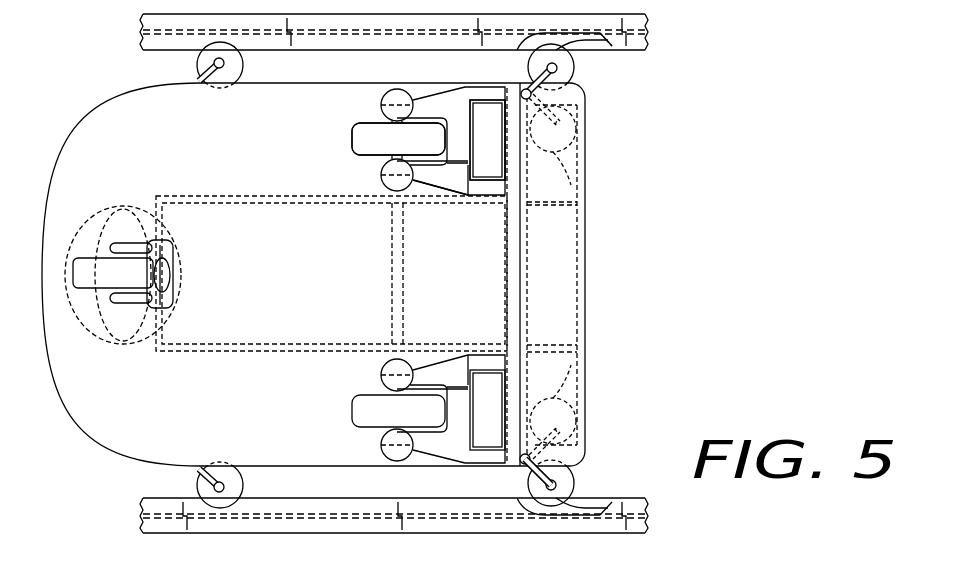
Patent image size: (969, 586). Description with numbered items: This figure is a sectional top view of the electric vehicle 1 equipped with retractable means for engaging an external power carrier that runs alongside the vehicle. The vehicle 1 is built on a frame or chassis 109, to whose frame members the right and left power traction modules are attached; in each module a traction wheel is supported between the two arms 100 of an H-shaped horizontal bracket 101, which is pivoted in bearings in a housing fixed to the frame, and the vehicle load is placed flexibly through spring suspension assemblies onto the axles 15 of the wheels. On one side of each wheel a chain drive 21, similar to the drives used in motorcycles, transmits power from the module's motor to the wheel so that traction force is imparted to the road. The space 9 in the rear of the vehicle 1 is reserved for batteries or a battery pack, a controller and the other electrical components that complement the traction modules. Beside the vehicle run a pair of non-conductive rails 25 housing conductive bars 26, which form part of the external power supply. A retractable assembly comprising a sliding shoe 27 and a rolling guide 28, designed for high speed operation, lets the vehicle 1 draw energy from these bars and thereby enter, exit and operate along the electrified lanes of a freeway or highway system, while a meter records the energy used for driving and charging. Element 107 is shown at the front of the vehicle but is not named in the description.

The vehicle 1 is at (72, 126).
The space 9 is at (590, 152).
The axles 15 is at (382, 164).
The chain drive 21 is at (468, 165).
The non-conductive rails 25 is at (457, 51).
The conductive bars 26 is at (572, 32).
The sliding shoe 27 is at (578, 508).
The rolling guide 28 is at (563, 462).
The arms 100 is at (432, 187).
The H-shaped horizontal bracket 101 is at (455, 198).
The front sensor unit 107 is at (71, 252).
The frame 109 is at (266, 197).